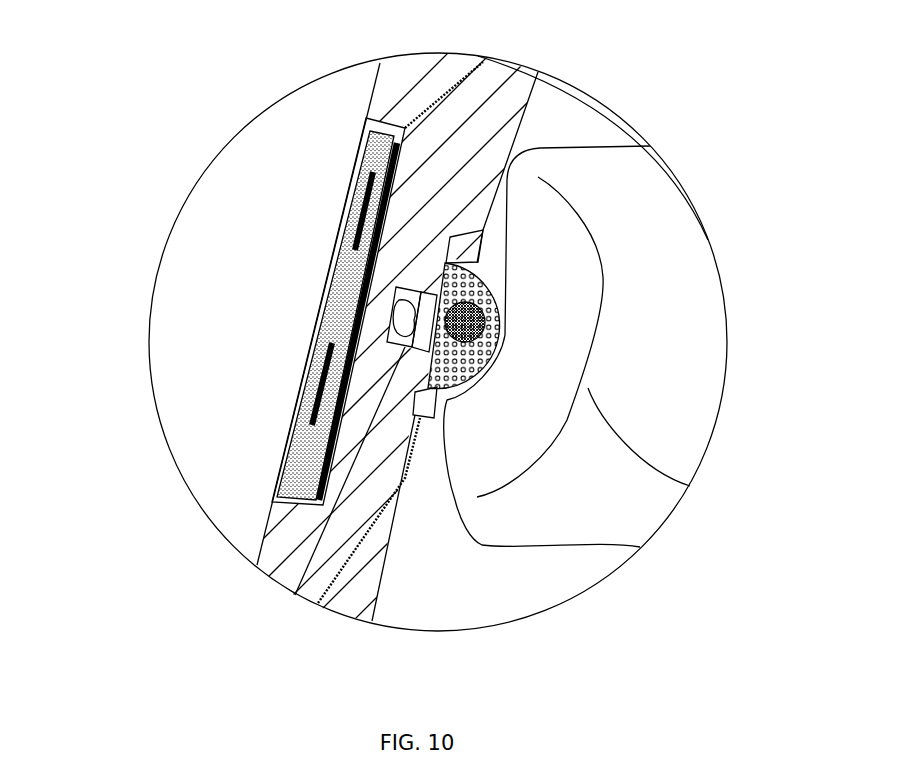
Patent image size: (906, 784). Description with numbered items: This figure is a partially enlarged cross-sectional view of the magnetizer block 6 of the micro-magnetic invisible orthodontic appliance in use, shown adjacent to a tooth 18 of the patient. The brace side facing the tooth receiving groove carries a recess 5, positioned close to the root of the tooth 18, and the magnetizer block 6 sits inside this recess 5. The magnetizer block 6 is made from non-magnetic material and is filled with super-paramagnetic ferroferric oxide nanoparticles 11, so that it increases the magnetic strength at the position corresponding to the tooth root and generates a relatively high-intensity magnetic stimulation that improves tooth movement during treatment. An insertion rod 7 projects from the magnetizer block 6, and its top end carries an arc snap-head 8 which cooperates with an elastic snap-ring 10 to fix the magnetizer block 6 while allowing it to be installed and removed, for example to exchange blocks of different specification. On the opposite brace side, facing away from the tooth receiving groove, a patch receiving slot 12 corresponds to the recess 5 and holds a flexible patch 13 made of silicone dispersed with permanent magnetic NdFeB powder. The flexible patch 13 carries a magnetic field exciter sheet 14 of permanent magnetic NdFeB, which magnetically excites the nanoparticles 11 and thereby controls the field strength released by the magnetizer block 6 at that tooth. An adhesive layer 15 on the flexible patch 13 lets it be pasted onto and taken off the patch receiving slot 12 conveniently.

The recess 5 is at (471, 240).
The magnetizer block 6 is at (438, 390).
The insertion rod 7 is at (429, 302).
The arc snap-head 8 is at (396, 300).
The elastic snap-ring 10 is at (295, 595).
The super-paramagnetic ferroferric oxide nanoparticles 11 is at (480, 334).
The patch receiving slot 12 is at (367, 117).
The flexible patch 13 is at (327, 313).
The magnetic field exciter sheet 14 is at (317, 368).
The adhesive layer 15 is at (318, 457).
The tooth 18 is at (642, 228).